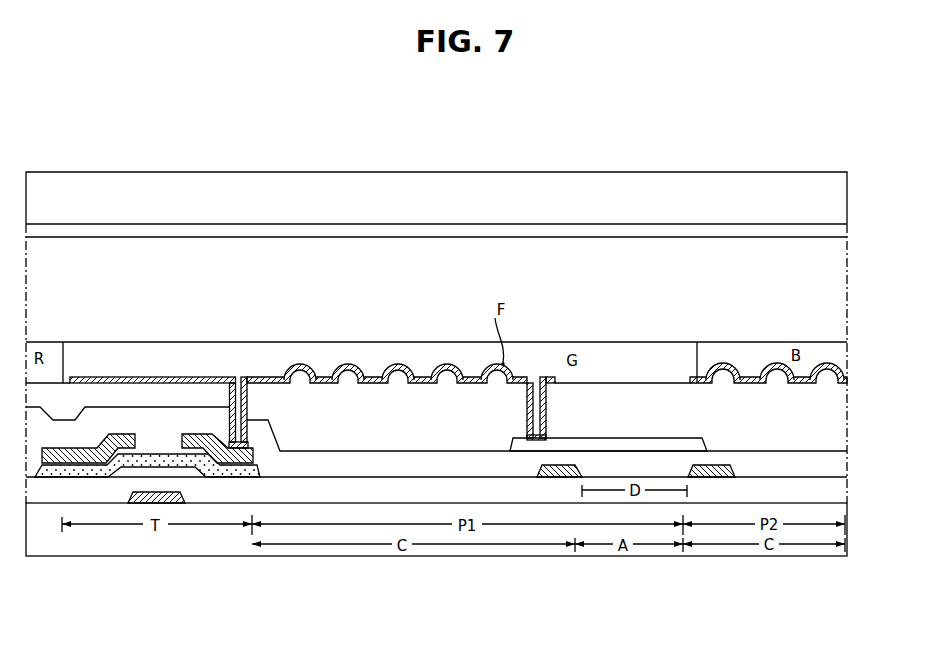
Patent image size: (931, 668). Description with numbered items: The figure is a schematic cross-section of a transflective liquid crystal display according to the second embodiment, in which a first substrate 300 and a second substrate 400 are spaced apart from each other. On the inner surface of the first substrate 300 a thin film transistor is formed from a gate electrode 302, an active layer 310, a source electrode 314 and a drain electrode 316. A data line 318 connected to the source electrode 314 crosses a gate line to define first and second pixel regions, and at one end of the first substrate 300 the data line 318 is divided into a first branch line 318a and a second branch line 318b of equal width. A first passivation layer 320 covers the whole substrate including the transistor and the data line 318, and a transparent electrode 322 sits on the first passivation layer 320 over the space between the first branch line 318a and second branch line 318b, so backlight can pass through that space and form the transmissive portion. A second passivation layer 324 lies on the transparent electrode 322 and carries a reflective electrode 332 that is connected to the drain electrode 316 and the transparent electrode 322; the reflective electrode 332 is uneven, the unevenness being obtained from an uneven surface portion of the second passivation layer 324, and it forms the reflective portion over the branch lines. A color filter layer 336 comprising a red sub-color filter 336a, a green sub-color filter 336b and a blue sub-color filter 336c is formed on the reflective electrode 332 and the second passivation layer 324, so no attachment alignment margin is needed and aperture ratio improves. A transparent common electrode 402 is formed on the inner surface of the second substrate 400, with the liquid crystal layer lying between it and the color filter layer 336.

The first substrate 300 is at (56, 543).
The gate electrode 302 is at (173, 502).
The active layer 310 is at (222, 478).
The source electrode 314 is at (118, 433).
The drain electrode 316 is at (207, 433).
The data line 318 is at (543, 607).
The first branch line 318a is at (549, 478).
The second branch line 318b is at (705, 477).
The first passivation layer 320 is at (158, 413).
The transparent electrode 322 is at (635, 437).
The second passivation layer 324 is at (326, 402).
The reflective electrode 332 is at (453, 363).
The color filter layer 336 is at (207, 125).
The red sub-color filter 336a is at (50, 356).
The green sub-color filter 336b is at (393, 120).
The blue sub-color filter 336c is at (716, 352).
The second substrate 400 is at (43, 209).
The common electrode 402 is at (778, 224).